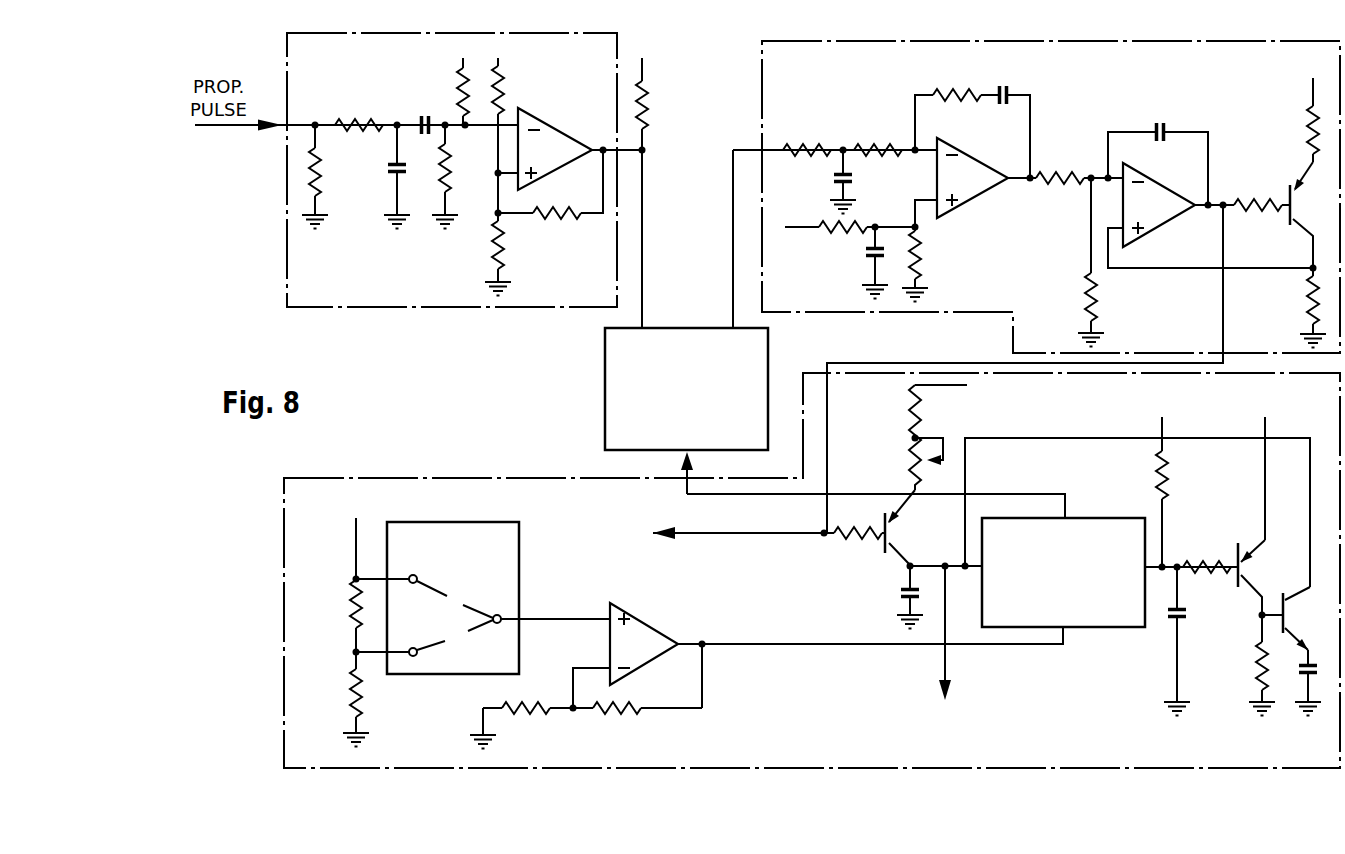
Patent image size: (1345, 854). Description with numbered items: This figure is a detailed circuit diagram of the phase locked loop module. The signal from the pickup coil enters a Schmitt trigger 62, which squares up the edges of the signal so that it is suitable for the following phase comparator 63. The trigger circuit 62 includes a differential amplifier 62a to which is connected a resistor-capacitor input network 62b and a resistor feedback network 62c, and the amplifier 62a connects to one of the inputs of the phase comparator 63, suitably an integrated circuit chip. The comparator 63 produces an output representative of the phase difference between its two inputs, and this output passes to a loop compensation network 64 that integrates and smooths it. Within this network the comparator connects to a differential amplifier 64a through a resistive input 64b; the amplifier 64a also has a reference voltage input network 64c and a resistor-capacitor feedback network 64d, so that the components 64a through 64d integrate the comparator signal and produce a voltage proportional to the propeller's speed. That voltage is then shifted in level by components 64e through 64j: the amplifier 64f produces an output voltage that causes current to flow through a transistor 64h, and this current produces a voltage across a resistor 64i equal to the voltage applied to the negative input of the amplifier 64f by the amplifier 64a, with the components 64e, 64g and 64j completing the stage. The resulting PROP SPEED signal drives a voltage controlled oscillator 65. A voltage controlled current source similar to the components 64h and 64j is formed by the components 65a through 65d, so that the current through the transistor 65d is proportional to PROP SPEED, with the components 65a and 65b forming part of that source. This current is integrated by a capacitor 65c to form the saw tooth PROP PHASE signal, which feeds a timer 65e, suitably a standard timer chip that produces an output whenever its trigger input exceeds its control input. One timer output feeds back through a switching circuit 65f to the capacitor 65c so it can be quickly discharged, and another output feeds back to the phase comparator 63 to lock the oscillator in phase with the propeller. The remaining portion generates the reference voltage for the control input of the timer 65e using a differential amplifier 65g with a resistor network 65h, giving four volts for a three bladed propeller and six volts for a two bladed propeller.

The Schmitt trigger 62 is at (285, 220).
The differential amplifier 62a is at (547, 122).
The resistor-capacitor input network 62b is at (456, 86).
The resistor feedback network 62c is at (558, 226).
The phase comparator 63 is at (603, 358).
The loop compensation network 64 is at (762, 117).
The differential amplifier 64a is at (987, 192).
The resistive input 64b is at (878, 143).
The reference voltage input network 64c is at (905, 255).
The resistor-capacitor feedback network 64d is at (1000, 86).
The level shifting component 64e is at (1086, 275).
The amplifier 64f is at (1170, 222).
The level shifting component 64g is at (1165, 122).
The transistor 64h is at (1287, 192).
The resistor 64i is at (1305, 292).
The level shifting component 64j is at (1305, 132).
The voltage controlled oscillator 65 is at (500, 477).
The current source component 65a is at (883, 521).
The current source component 65b is at (870, 537).
The capacitor 65c is at (897, 595).
The transistor 65d is at (910, 447).
The timer 65e is at (1100, 628).
The switching circuit 65f is at (1283, 598).
The differential amplifier 65g is at (658, 631).
The resistor network 65h is at (350, 673).